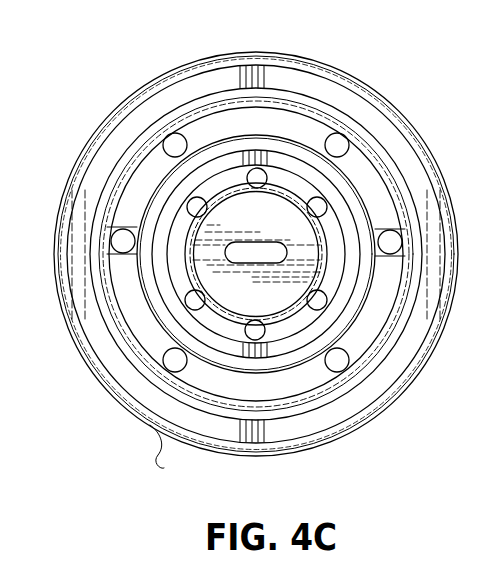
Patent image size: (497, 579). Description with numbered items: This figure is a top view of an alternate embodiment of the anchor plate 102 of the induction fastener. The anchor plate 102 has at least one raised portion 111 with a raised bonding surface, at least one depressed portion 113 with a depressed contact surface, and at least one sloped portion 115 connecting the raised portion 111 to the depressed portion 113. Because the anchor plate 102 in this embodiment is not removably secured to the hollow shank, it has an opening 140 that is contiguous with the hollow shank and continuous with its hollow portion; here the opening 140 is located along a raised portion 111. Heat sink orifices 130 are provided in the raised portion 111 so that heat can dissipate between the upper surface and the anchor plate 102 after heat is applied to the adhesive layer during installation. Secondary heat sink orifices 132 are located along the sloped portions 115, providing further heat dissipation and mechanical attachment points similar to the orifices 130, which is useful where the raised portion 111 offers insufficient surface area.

The anchor plate 102 is at (408, 75).
The raised portion 111 is at (237, 212).
The depressed portion 113 is at (178, 237).
The sloped portion 115 is at (180, 193).
The heat sink orifices 130 is at (386, 257).
The secondary heat sink orifices 132 is at (300, 197).
The opening 140 is at (265, 241).